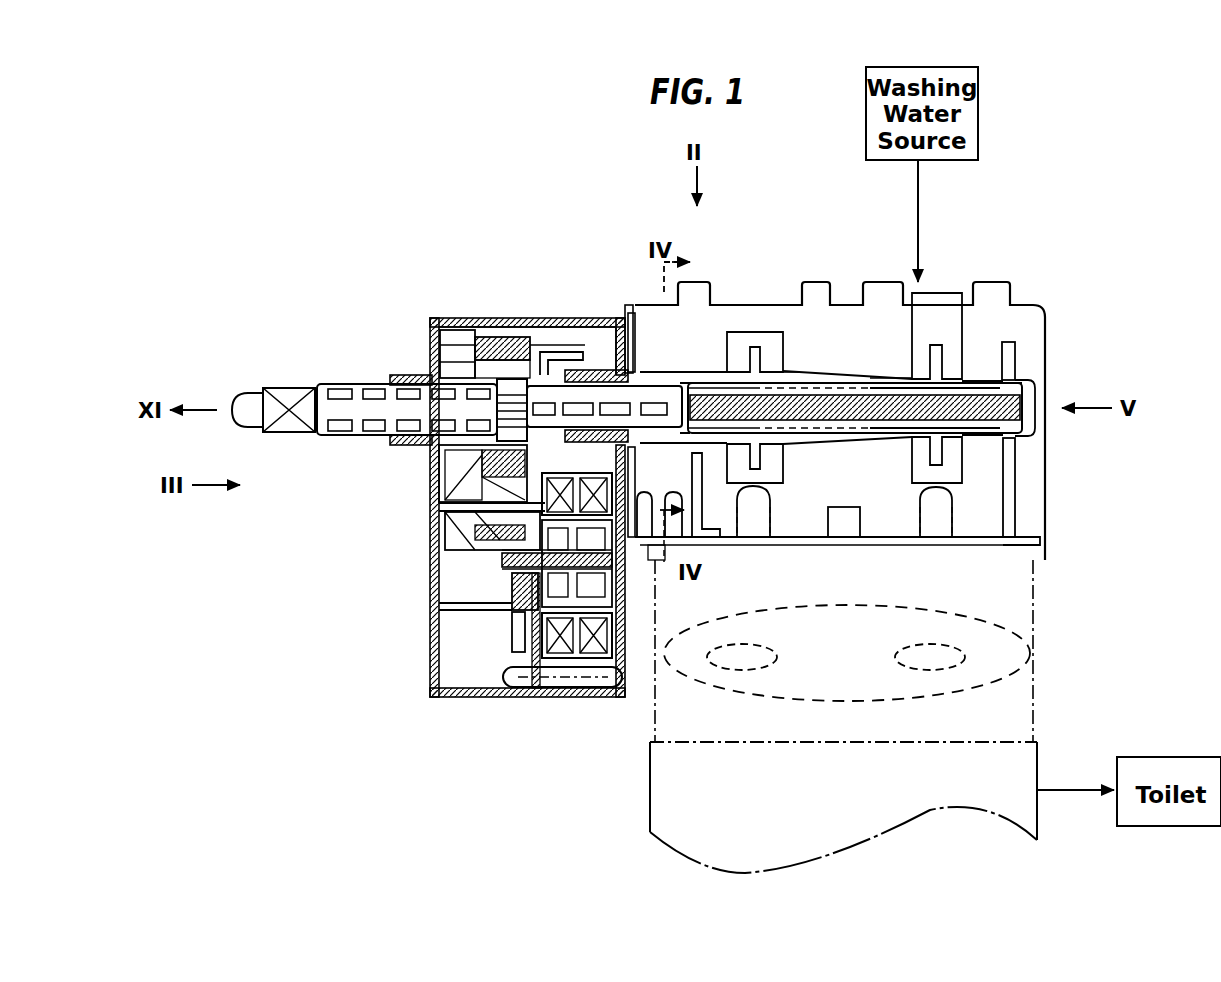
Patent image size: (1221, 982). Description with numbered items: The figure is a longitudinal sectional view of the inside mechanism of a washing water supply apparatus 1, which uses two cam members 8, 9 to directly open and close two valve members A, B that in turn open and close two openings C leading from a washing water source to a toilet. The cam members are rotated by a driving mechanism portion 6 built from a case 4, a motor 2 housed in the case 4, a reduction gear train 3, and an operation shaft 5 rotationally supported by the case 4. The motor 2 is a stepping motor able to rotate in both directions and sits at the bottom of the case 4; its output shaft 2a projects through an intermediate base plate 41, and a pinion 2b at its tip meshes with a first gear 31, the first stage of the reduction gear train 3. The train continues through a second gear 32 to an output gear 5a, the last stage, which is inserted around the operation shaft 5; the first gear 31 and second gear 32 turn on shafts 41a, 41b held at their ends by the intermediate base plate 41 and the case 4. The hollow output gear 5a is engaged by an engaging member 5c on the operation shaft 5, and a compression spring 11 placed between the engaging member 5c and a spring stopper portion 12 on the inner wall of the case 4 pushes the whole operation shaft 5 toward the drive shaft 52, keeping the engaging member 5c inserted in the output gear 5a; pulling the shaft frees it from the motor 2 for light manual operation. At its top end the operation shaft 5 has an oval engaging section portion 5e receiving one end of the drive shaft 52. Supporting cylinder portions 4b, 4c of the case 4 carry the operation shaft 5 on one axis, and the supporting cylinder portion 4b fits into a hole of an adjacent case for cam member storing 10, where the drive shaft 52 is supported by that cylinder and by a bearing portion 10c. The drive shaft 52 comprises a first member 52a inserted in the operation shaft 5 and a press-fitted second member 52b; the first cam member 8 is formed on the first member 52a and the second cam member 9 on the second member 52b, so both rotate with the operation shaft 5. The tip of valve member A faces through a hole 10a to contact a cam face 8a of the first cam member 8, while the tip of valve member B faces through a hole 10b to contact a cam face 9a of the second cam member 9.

The washing water supply apparatus 1 is at (816, 178).
The motor 2 is at (615, 605).
The output shaft 2a is at (596, 590).
The pinion 2b is at (436, 552).
The reduction gear train 3 is at (468, 656).
The case 4 is at (432, 650).
The supporting cylinder portion 4b is at (607, 335).
The supporting cylinder portion 4c is at (398, 375).
The operation shaft 5 is at (356, 384).
The output gear 5a is at (493, 340).
The engaging member 5c is at (543, 340).
The engaging section portion 5e is at (700, 380).
The driving mechanism portion 6 is at (618, 236).
The first cam member 8 is at (762, 332).
The cam face 8a is at (787, 545).
The second cam member 9 is at (936, 300).
The cam face 9a is at (963, 490).
The case for cam member storing 10 is at (992, 325).
The hole 10a is at (708, 545).
The hole 10b is at (905, 548).
The bearing portion 10c is at (1015, 372).
The compression spring 11 is at (457, 340).
The spring stopper portion 12 is at (427, 340).
The first gear 31 is at (492, 655).
The second gear 32 is at (445, 466).
The intermediate base plate 41 is at (522, 672).
The shaft 41a is at (436, 611).
The shaft 41b is at (436, 503).
The drive shaft 52 is at (905, 224).
The first member 52a is at (790, 370).
The second member 52b is at (880, 362).
The valve member A is at (752, 545).
The valve member B is at (936, 545).
The openings C is at (1030, 647).